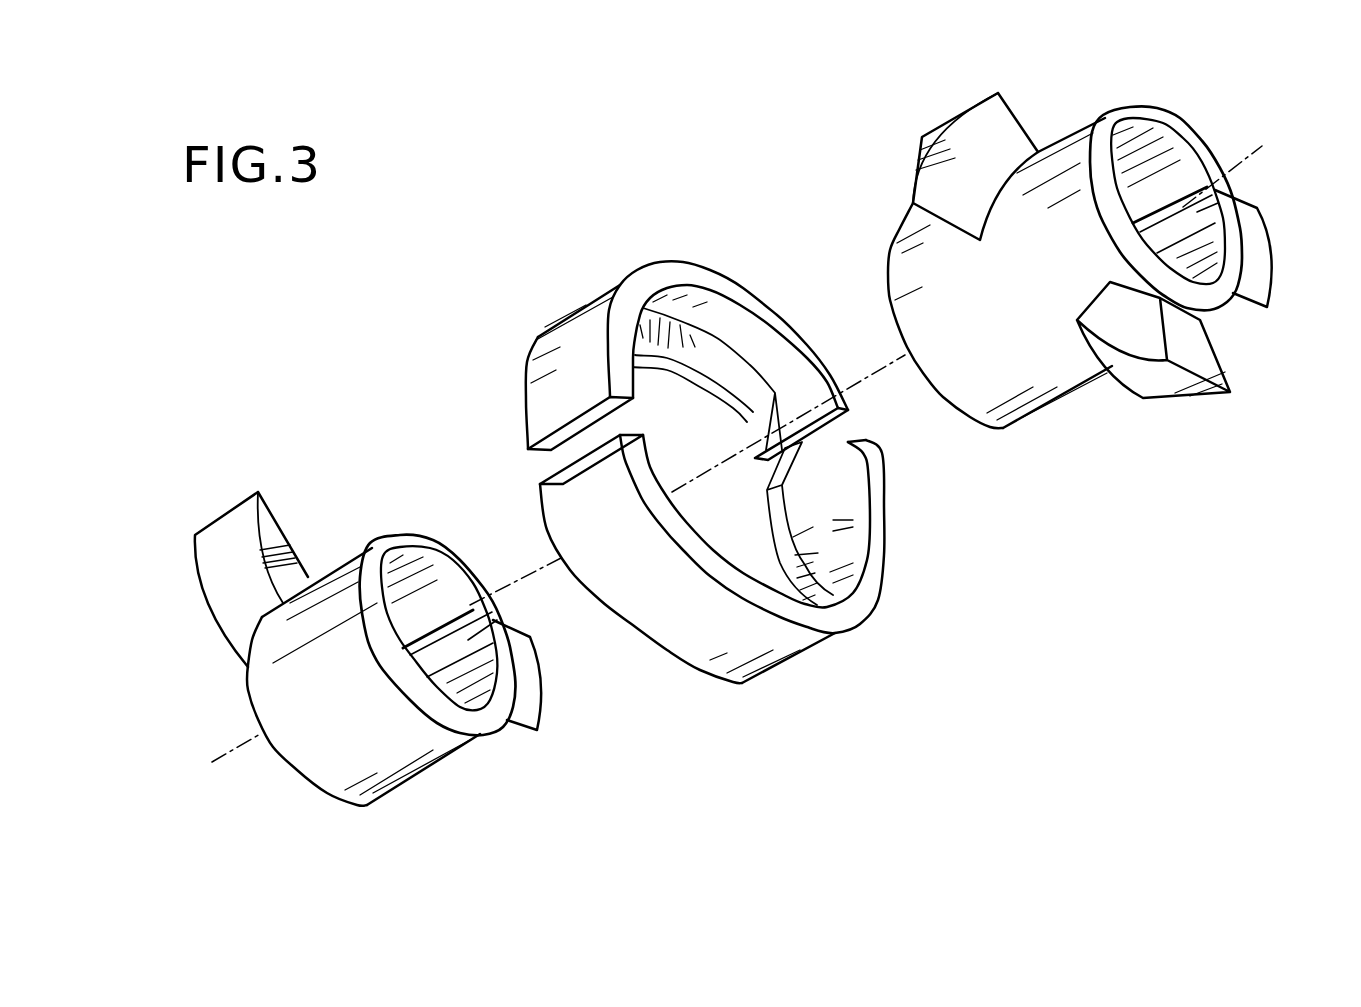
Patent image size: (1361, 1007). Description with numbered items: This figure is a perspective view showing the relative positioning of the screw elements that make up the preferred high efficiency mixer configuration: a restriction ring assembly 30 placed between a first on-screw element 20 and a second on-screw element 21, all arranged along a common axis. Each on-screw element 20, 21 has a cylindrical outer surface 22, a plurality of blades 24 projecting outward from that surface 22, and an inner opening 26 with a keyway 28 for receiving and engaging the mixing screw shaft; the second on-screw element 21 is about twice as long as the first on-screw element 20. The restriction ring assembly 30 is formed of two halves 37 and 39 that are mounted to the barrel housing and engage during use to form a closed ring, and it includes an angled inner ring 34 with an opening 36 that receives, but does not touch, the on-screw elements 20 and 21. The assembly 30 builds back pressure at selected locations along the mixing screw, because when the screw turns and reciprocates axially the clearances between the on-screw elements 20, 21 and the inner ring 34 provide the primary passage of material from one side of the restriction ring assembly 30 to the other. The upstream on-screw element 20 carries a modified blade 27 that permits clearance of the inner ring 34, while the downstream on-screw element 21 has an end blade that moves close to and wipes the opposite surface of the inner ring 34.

The on-screw element 20 is at (347, 616).
The on-screw element 21 is at (886, 275).
The cylindrical outer surface 22 is at (392, 770).
The blades 24 is at (540, 735).
The inner opening 26 is at (440, 603).
The modified blade 27 is at (258, 490).
The keyway 28 is at (470, 634).
The restriction ring assembly 30 is at (645, 362).
The inner ring 34 is at (813, 527).
The opening 36 is at (707, 505).
The half 37 is at (732, 428).
The half 39 is at (696, 555).